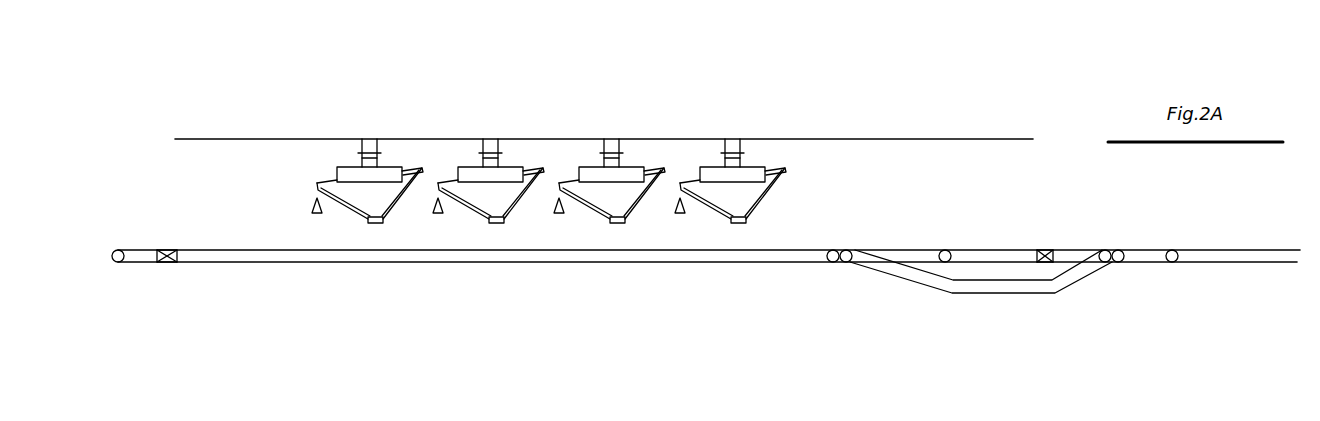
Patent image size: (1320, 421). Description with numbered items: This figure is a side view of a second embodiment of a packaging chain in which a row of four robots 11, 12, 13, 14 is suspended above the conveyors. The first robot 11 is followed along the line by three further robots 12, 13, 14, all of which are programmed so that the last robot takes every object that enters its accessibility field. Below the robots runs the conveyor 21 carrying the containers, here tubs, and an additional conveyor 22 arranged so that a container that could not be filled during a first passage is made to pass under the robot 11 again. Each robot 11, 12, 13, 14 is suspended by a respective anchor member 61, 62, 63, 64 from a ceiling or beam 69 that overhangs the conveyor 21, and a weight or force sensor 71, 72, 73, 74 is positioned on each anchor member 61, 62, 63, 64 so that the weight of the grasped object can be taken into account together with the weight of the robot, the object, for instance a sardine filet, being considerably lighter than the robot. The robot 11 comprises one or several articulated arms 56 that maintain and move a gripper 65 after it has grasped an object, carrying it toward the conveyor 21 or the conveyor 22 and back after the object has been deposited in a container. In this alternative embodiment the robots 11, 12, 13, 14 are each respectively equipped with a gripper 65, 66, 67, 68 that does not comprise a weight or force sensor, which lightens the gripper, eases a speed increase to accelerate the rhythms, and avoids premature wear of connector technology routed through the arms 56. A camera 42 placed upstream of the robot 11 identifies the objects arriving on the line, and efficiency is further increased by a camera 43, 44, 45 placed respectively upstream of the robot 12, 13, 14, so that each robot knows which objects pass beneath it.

The robot 11 is at (381, 219).
The robot 12 is at (491, 219).
The robot 13 is at (612, 219).
The robot 14 is at (733, 219).
The conveyor 21 is at (142, 249).
The additional conveyor 22 is at (483, 264).
The camera 42 is at (317, 214).
The camera 43 is at (441, 263).
The camera 44 is at (562, 263).
The camera 45 is at (683, 263).
The arm 56 is at (345, 208).
The anchor member 61 is at (352, 153).
The anchor member 62 is at (466, 111).
The anchor member 63 is at (587, 111).
The anchor member 64 is at (708, 111).
The gripper 65 is at (377, 226).
The gripper 66 is at (507, 294).
The gripper 67 is at (628, 294).
The gripper 68 is at (749, 294).
The ceiling or beam 69 is at (877, 141).
The weight or force sensor 71 is at (380, 153).
The weight or force sensor 72 is at (512, 153).
The weight or force sensor 73 is at (633, 153).
The weight or force sensor 74 is at (754, 153).